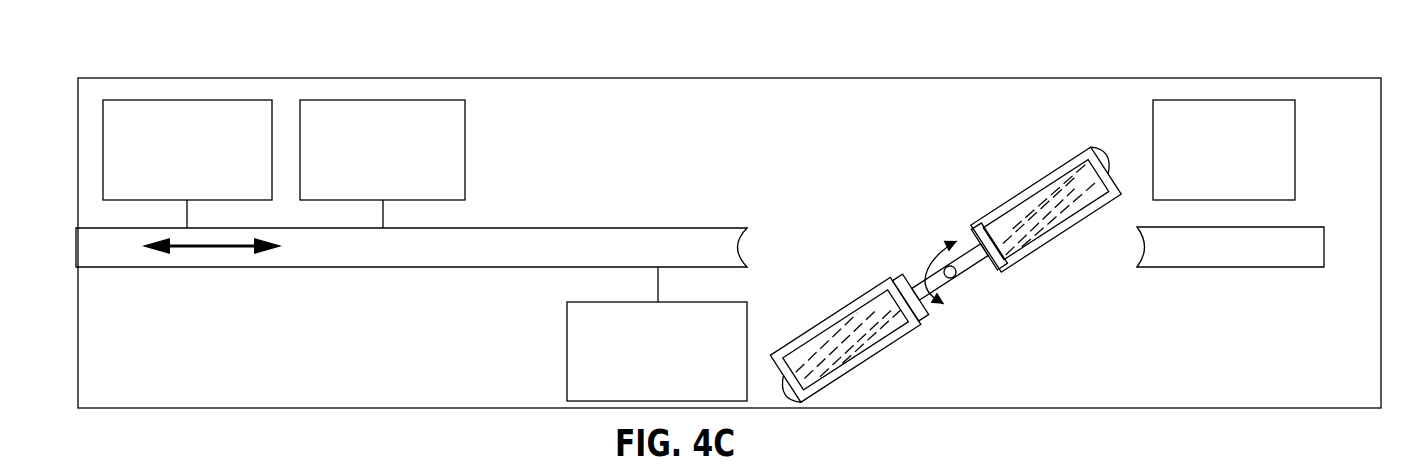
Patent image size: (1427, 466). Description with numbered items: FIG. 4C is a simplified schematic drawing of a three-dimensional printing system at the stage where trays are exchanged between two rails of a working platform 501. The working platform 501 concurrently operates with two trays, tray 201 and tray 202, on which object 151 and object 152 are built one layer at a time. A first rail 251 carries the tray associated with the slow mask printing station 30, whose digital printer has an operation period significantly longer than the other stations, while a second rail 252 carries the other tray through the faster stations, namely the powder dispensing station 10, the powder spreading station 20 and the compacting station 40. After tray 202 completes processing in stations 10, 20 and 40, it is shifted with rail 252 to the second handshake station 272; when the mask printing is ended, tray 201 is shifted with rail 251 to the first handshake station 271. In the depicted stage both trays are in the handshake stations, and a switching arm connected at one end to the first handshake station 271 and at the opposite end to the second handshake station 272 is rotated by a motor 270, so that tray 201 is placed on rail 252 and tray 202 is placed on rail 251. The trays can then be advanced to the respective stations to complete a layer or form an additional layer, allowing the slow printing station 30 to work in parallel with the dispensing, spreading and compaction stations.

The powder dispensing station 10 is at (184, 100).
The powder spreading station 20 is at (424, 100).
The mask printing station 30 is at (1235, 100).
The compacting station 40 is at (567, 372).
The working platform 501 is at (712, 78).
The rail 252 is at (589, 228).
The first rail 251 is at (1324, 247).
The object 151 is at (1030, 252).
The object 152 is at (833, 326).
The tray 201 is at (1100, 204).
The tray 202 is at (878, 355).
The motor 270 is at (958, 276).
The first handshake station 271 is at (970, 227).
The second handshake station 272 is at (897, 283).